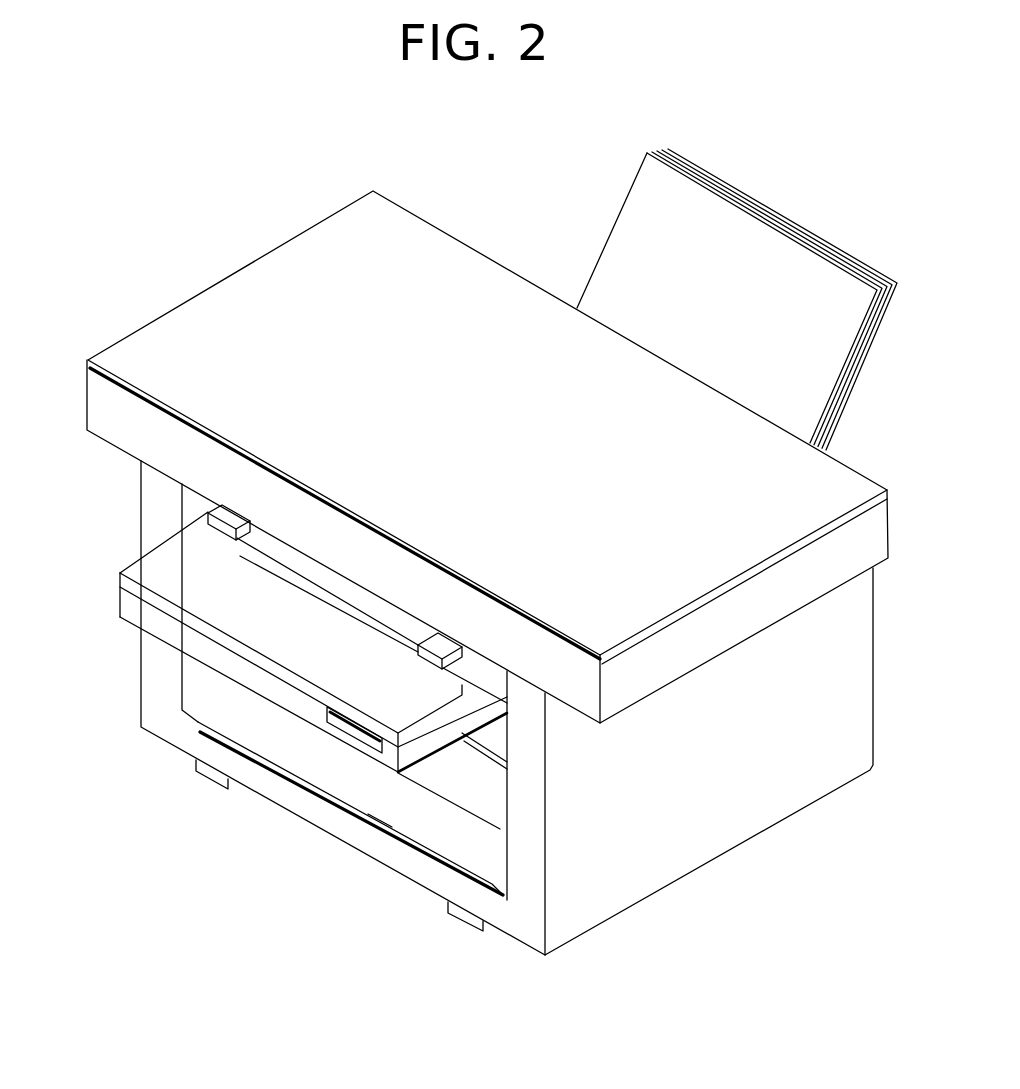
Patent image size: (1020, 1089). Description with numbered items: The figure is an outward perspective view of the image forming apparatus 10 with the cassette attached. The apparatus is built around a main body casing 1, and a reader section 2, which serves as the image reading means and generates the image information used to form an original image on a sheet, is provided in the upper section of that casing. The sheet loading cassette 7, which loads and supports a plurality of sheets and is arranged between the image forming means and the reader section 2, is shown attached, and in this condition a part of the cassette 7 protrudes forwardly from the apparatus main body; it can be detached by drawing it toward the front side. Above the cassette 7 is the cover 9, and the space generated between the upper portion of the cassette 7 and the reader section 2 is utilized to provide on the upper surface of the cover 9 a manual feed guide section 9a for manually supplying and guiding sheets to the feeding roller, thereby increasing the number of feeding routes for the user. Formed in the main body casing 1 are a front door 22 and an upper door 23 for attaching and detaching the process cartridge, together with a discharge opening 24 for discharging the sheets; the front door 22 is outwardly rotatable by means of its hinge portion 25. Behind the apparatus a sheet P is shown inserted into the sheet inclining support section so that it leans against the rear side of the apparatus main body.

The main body casing 1 is at (707, 843).
The reader section 2 is at (95, 418).
The sheet loading cassette 7 is at (132, 603).
The cover 9 is at (146, 569).
The manual feed guide section 9a is at (215, 514).
The image forming apparatus 10 is at (243, 805).
The front door 22 is at (453, 785).
The upper door 23 is at (495, 745).
The discharge opening 24 is at (378, 818).
The hinge portion 25 is at (423, 777).
The sheet P is at (837, 347).